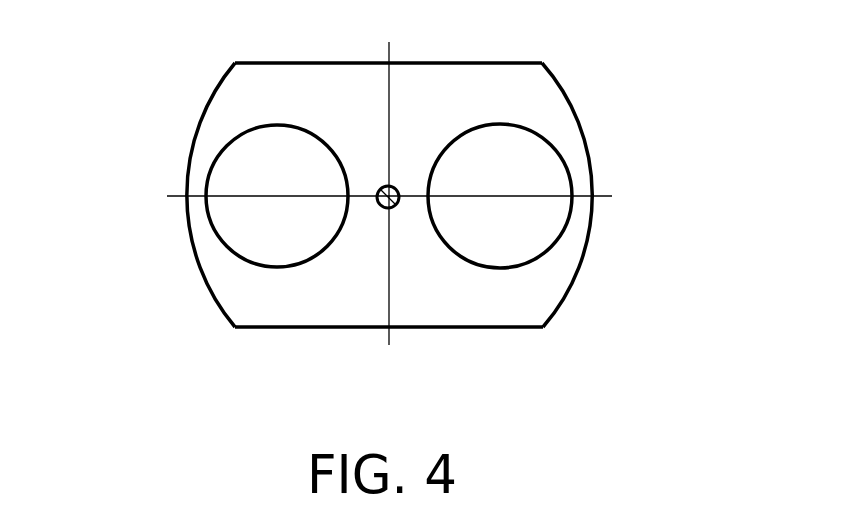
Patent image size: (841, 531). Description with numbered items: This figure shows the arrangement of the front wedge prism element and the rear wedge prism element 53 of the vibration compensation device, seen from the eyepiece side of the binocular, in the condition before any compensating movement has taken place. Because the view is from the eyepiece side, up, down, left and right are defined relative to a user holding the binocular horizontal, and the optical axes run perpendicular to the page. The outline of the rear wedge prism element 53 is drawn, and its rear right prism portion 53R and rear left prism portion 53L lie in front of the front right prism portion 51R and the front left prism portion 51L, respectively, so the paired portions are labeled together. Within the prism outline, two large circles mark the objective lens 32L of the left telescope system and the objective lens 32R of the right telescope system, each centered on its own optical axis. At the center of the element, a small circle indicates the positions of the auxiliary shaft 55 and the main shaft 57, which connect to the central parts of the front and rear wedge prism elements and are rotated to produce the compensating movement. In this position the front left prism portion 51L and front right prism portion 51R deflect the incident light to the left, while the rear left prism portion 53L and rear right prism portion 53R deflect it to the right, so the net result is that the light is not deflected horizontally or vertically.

The rear wedge prism element 53 is at (386, 170).
The rear left prism portion 53L is at (140, 201).
The front left prism portion 51L is at (193, 257).
The rear right prism portion 53R is at (635, 179).
The front right prism portion 51R is at (572, 102).
The objective lens 32L is at (210, 162).
The objective lens 32R is at (563, 230).
The auxiliary shaft 55 is at (320, 286).
The main shaft 57 is at (383, 208).